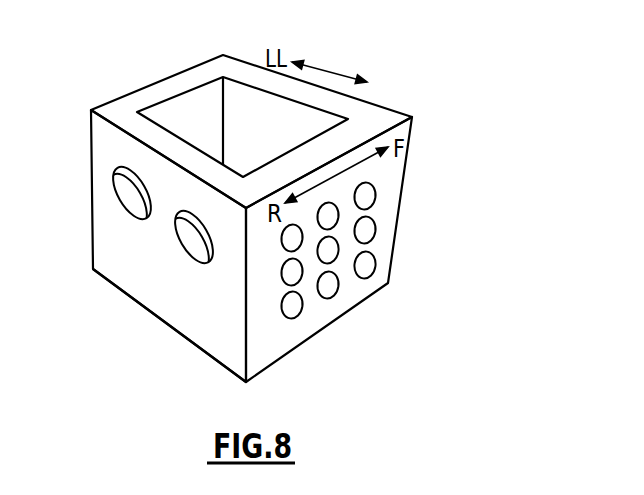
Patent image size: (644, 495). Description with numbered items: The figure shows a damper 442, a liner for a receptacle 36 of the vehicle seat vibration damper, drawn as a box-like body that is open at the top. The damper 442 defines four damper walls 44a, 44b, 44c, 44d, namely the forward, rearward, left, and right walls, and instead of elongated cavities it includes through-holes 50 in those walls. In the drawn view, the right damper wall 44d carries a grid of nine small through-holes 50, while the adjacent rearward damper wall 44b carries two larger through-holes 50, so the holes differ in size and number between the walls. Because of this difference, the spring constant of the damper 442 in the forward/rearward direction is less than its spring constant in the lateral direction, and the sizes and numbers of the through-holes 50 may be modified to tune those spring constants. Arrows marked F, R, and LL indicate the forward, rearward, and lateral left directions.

The receptacle 36 is at (247, 102).
The forward damper wall 44a is at (312, 95).
The rearward damper wall 44b is at (165, 145).
The left damper wall 44c is at (173, 85).
The right damper wall 44d is at (338, 140).
The damper 442 is at (194, 363).
The through-holes 50 is at (190, 244).